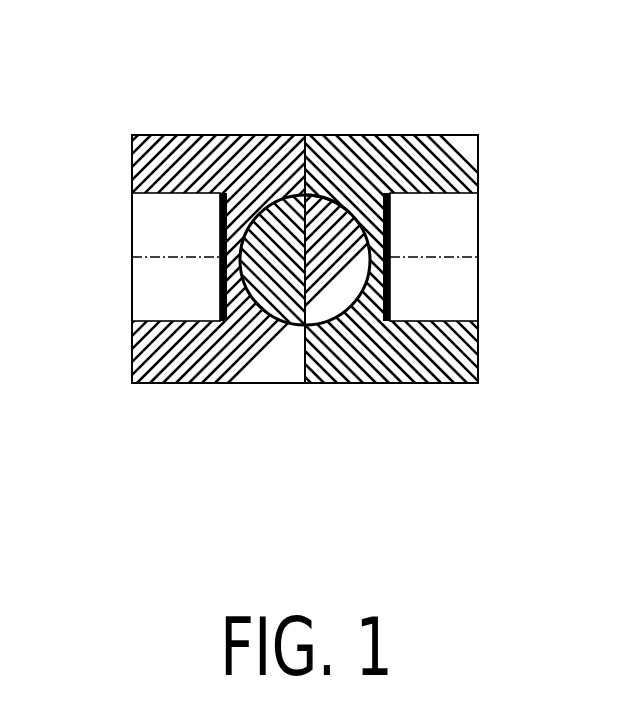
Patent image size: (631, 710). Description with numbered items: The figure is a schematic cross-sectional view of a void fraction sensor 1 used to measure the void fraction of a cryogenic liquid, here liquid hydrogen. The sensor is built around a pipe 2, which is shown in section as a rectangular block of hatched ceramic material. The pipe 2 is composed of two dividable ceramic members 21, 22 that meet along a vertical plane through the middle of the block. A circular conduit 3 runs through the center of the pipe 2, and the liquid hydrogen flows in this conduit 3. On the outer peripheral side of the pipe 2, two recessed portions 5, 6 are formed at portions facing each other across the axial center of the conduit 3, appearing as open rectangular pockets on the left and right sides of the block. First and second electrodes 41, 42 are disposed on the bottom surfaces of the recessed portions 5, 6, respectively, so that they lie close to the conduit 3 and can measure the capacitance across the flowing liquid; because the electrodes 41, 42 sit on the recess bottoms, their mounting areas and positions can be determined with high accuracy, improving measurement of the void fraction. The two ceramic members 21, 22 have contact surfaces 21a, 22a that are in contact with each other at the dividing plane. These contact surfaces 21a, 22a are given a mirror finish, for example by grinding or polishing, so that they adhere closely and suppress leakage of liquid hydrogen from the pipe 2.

The void fraction sensor 1 is at (103, 106).
The pipe 2 is at (422, 478).
The ceramic member 21 is at (272, 355).
The ceramic member 22 is at (372, 350).
The contact surface 21a is at (272, 135).
The contact surface 22a is at (323, 198).
The conduit 3 is at (340, 206).
The recessed portion 5 is at (168, 194).
The recessed portion 6 is at (458, 196).
The first electrode 41 is at (220, 305).
The second electrode 42 is at (392, 243).